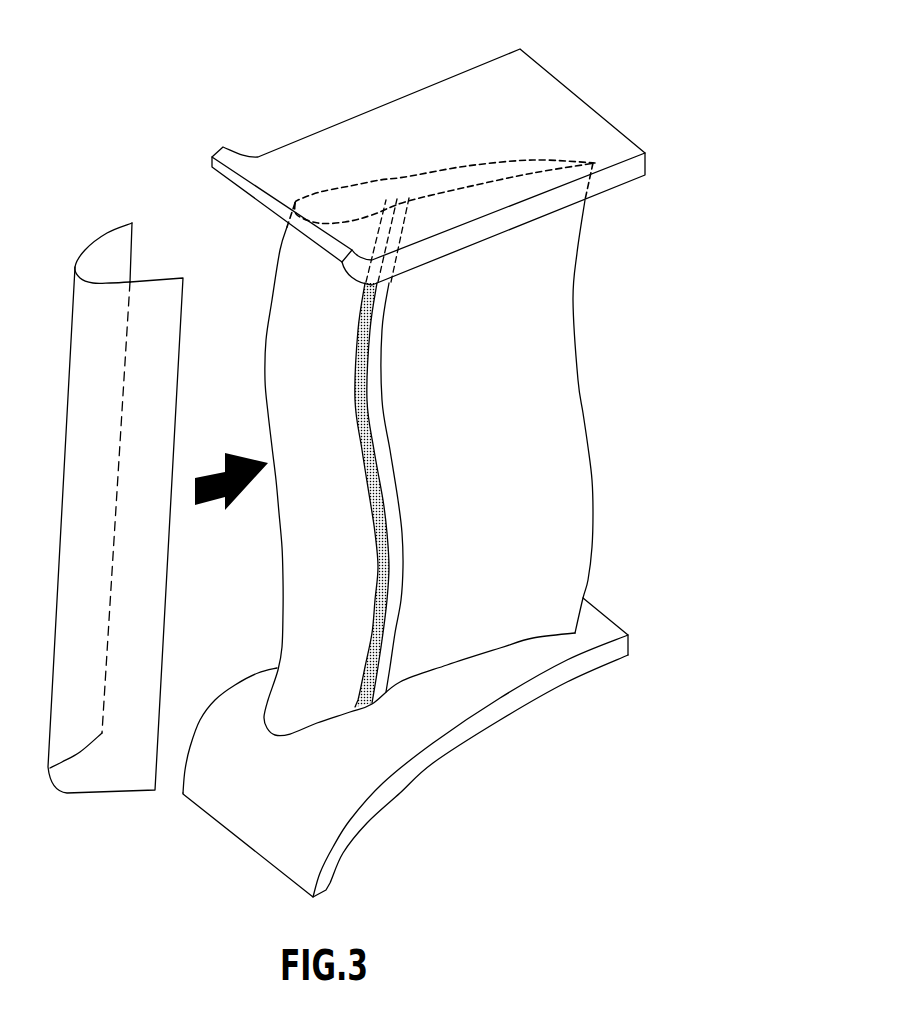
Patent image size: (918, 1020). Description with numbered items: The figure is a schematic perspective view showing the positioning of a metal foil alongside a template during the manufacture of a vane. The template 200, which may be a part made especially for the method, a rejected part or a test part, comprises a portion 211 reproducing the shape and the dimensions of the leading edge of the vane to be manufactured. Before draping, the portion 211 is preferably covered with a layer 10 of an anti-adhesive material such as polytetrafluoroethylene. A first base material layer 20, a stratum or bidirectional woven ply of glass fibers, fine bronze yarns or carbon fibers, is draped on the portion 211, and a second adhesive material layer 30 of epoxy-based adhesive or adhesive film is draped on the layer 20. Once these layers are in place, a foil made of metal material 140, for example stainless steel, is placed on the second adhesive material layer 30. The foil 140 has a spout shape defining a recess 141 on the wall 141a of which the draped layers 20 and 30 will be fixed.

The layer of anti-adhesive material 10 is at (405, 528).
The first base material layer 20 is at (375, 472).
The second adhesive material layer 30 is at (340, 422).
The foil made of metal material 140 is at (122, 523).
The recess 141 is at (122, 502).
The wall of the recess 141a is at (107, 253).
The template 200 is at (380, 78).
The portion of the template 211 is at (286, 302).